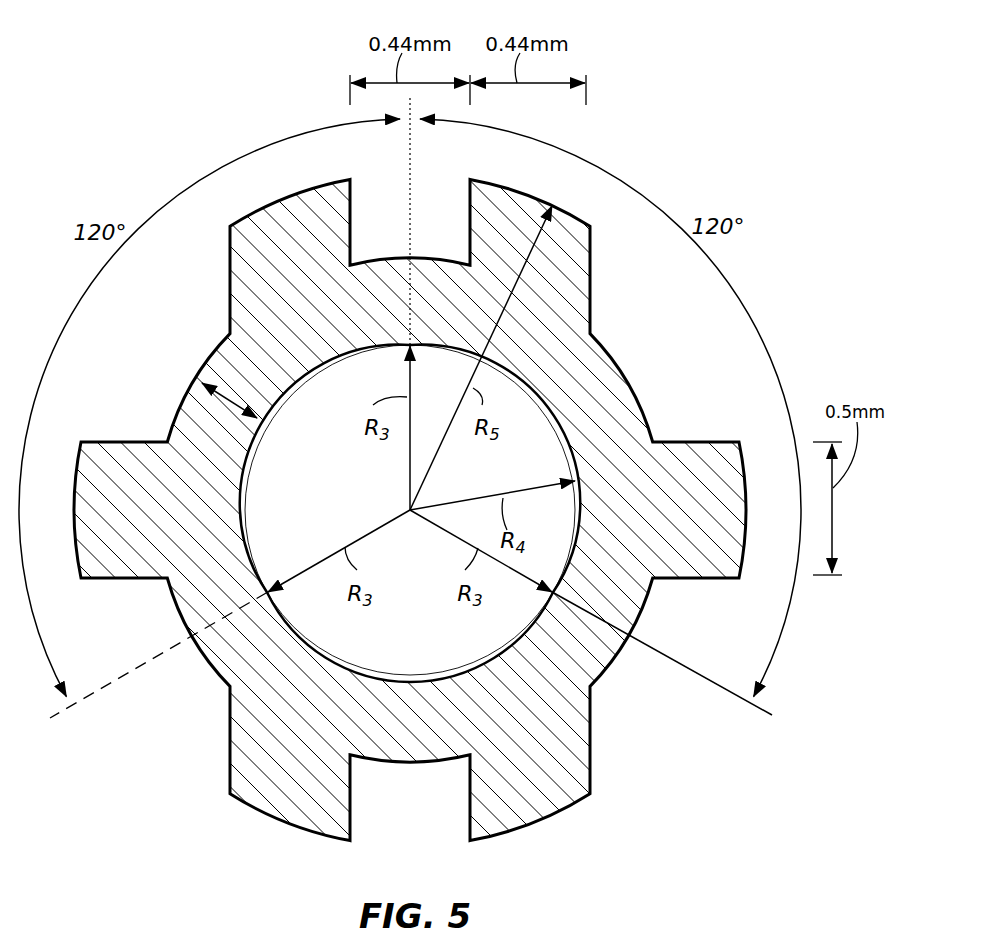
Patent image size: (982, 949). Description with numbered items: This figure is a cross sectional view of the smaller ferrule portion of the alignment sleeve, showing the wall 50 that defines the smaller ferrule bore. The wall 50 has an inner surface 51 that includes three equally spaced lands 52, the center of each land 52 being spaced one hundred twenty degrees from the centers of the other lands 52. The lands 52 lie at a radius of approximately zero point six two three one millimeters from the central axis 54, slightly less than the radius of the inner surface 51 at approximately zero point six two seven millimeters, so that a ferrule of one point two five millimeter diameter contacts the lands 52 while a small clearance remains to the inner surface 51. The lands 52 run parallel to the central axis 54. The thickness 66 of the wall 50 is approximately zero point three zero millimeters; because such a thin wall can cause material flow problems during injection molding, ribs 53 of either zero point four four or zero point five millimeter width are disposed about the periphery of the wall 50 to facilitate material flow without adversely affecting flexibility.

The wall 50 is at (610, 360).
The inner surface 51 is at (247, 455).
The lands 52 is at (393, 346).
The ribs 53 is at (230, 258).
The central axis 54 is at (410, 522).
The thickness 66 is at (236, 388).